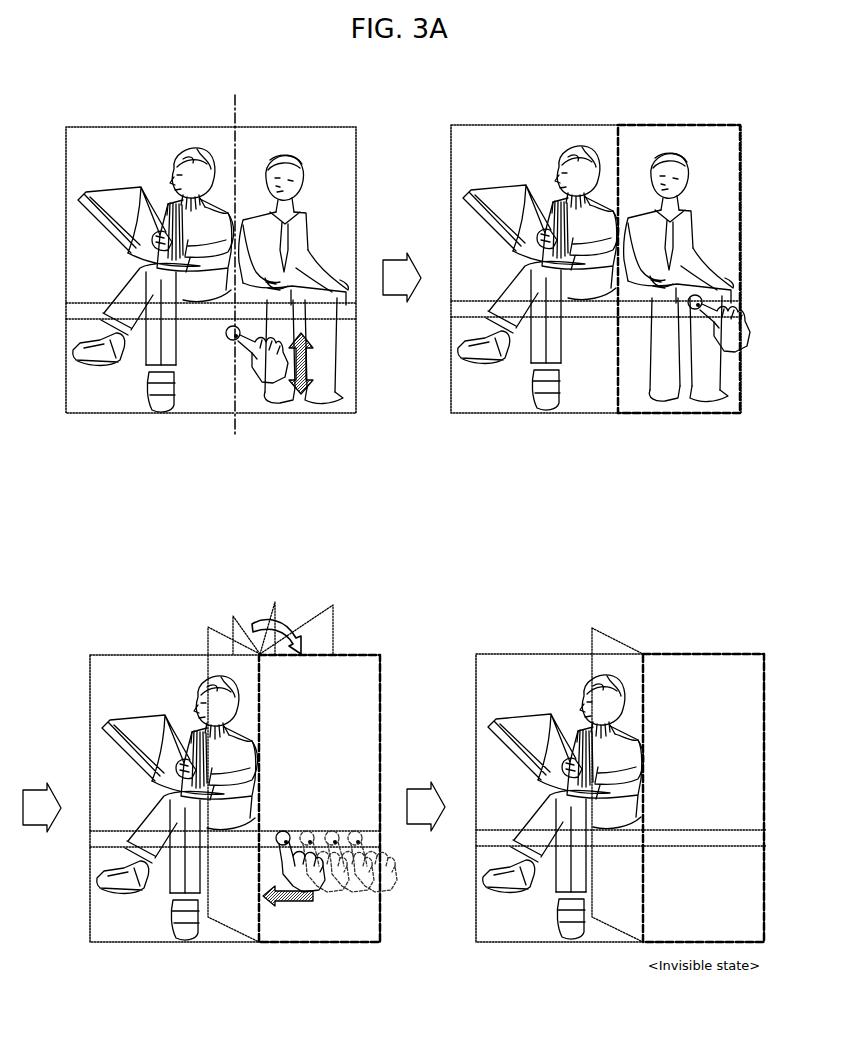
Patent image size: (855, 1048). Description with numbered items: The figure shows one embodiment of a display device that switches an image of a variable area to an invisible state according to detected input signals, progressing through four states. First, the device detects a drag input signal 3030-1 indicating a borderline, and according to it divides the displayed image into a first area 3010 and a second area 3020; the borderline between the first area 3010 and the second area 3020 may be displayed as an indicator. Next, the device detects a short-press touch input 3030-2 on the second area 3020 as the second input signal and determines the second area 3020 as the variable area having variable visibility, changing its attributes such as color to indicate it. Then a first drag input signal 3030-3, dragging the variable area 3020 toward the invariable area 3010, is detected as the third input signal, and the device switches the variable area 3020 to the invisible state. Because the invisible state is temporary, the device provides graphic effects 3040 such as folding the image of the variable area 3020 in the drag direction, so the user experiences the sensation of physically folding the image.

The first area 3010 is at (162, 129).
The second area 3020 is at (307, 129).
The drag input signal 3030-1 is at (257, 380).
The short-press touch input 3030-2 is at (740, 333).
The first drag input signal 3030-3 is at (320, 893).
The graphic effects 3040 is at (323, 628).